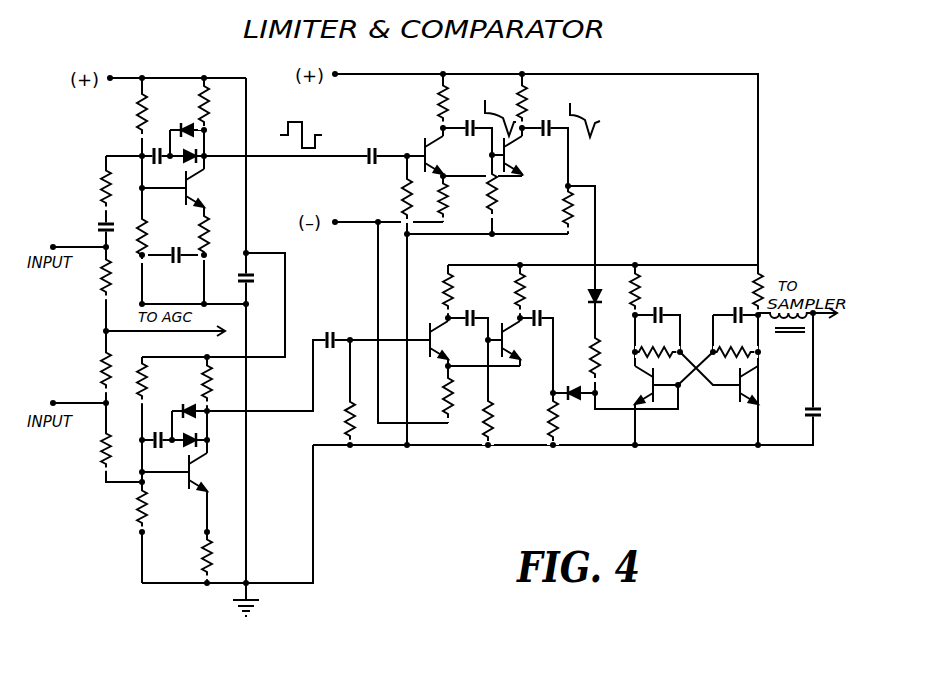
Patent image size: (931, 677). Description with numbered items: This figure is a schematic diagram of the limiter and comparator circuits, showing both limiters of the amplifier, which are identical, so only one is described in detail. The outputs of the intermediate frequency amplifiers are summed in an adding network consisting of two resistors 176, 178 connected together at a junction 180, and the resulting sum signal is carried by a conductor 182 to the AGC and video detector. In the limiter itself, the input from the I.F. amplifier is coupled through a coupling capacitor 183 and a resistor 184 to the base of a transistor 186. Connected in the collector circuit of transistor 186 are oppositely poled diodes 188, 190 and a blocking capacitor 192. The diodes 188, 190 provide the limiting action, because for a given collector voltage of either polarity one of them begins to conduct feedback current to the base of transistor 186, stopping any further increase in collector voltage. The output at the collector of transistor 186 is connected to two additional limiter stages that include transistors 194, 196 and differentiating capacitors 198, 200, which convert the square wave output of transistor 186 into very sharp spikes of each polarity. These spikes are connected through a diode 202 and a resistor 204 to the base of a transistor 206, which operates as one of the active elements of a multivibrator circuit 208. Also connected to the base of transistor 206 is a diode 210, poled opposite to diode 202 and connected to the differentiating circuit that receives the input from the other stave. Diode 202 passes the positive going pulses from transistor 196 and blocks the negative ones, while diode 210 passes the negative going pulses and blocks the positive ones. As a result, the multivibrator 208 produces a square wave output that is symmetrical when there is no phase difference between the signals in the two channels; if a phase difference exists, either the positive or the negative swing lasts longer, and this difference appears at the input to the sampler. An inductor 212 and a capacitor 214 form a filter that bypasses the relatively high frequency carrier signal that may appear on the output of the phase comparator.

The resistor 176 is at (104, 284).
The resistor 178 is at (102, 376).
The junction 180 is at (104, 332).
The conductor 182 is at (160, 333).
The coupling capacitor 183 is at (99, 227).
The resistor 184 is at (103, 184).
The transistor 186 is at (200, 177).
The diode 188 is at (202, 148).
The diode 190 is at (187, 124).
The blocking capacitor 192 is at (149, 152).
The transistor 194 is at (428, 140).
The transistor 196 is at (516, 148).
The differentiating capacitor 198 is at (462, 122).
The differentiating capacitor 200 is at (543, 122).
The diode 202 is at (596, 285).
The resistor 204 is at (597, 355).
The transistor 206 is at (662, 398).
The multivibrator circuit 208 is at (696, 347).
The diode 210 is at (564, 388).
The inductor 212 is at (770, 334).
The capacitor 214 is at (811, 407).